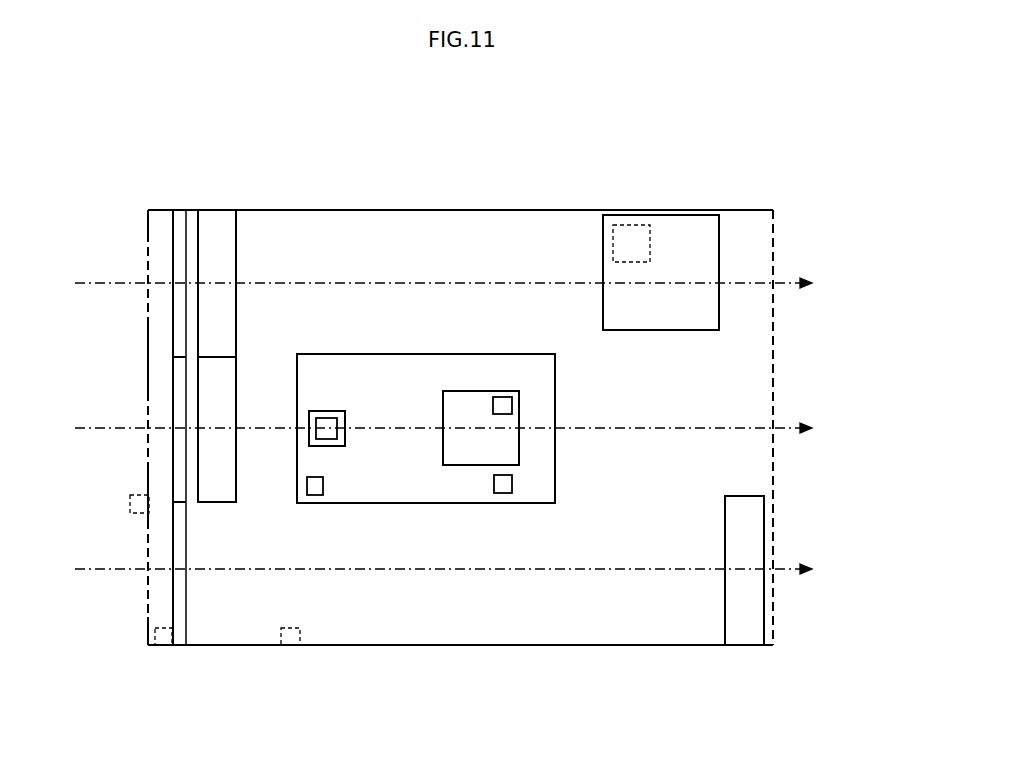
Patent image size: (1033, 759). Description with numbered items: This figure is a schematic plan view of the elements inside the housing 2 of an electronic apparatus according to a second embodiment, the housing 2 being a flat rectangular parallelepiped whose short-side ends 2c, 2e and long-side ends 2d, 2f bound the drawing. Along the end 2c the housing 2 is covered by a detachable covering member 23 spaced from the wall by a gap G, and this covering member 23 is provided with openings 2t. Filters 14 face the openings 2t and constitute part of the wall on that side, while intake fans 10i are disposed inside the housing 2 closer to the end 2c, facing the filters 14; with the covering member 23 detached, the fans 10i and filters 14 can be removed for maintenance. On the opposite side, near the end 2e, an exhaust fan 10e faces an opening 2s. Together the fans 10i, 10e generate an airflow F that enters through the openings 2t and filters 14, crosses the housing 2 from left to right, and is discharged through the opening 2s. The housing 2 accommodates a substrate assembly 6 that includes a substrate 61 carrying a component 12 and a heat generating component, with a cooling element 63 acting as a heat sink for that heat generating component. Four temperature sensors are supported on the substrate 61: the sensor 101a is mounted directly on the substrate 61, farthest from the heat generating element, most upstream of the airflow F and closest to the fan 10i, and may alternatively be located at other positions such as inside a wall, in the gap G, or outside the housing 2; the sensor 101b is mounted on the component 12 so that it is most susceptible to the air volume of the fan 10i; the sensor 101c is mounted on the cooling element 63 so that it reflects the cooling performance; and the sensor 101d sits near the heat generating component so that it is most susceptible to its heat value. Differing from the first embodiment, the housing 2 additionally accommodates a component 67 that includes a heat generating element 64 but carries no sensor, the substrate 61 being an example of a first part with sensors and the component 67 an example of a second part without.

The housing 2 is at (745, 203).
The openings 2t is at (146, 250).
The covering member 23 is at (140, 218).
The filters 14 is at (176, 238).
The fans 10i is at (240, 236).
The gap G is at (158, 313).
The end 2c is at (176, 368).
The substrate 61 is at (415, 365).
The component 12 is at (339, 411).
The sensor 101b is at (326, 425).
The cooling element 63 is at (461, 450).
The sensor 101c is at (502, 400).
The sensor 101d is at (503, 485).
The sensor 101a is at (316, 495).
The component 67 is at (690, 215).
The heat generating element 64 is at (638, 223).
The end 2f is at (578, 208).
The fan 10e is at (776, 616).
The airflow F is at (740, 290).
The opening 2s is at (775, 228).
The end 2e is at (775, 348).
The end 2d is at (705, 648).
The substrate assembly 6 is at (536, 514).